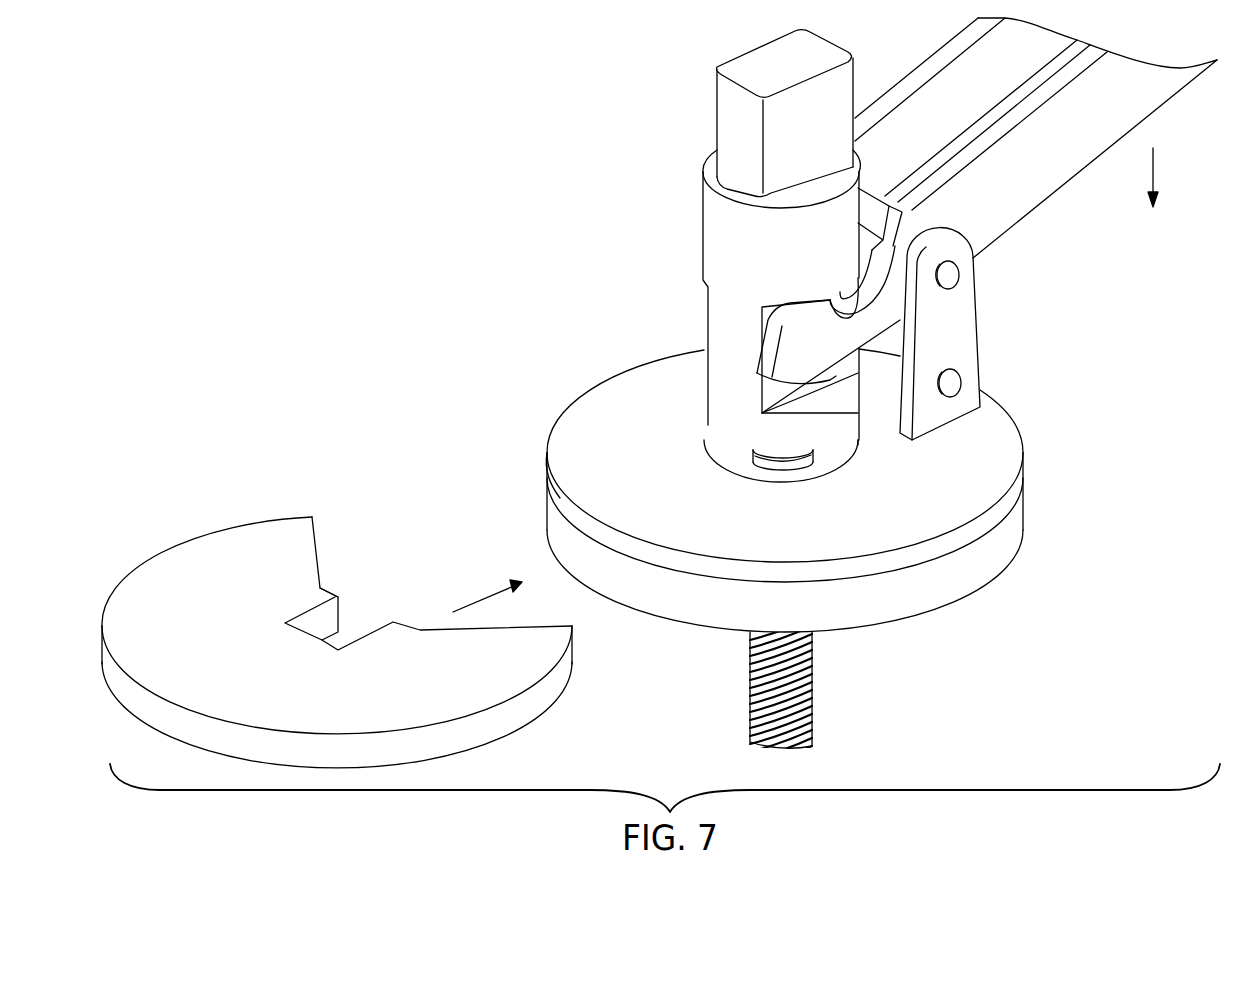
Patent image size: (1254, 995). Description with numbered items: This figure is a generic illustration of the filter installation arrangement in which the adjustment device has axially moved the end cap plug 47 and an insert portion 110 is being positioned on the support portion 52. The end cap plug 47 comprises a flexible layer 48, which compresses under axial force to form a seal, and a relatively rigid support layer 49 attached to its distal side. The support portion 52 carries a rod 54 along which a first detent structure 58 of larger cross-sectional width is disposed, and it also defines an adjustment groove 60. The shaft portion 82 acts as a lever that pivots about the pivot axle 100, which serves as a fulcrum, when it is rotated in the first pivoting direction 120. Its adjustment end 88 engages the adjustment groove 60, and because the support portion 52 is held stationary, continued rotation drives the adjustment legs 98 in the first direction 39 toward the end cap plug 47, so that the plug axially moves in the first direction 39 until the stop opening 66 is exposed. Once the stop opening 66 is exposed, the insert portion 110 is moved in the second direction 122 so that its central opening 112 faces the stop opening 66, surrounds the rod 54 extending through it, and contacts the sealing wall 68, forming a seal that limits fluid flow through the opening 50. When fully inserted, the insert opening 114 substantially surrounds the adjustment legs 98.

The first direction 39 is at (835, 655).
The end cap plug 47 is at (1023, 473).
The flexible layer 48 is at (550, 521).
The support layer 49 is at (548, 479).
The opening 50 is at (705, 448).
The support portion 52 is at (717, 98).
The rod 54 is at (783, 464).
The first detent structure 58 is at (703, 220).
The adjustment groove 60 is at (762, 323).
The stop opening 66 is at (838, 462).
The sealing wall 68 is at (850, 440).
The shaft portion 82 is at (1077, 176).
The adjustment end 88 is at (830, 387).
The adjustment legs 98 is at (961, 334).
The pivot axle 100 is at (965, 268).
The insert portion 110 is at (168, 545).
The central opening 112 is at (308, 610).
The insert opening 114 is at (330, 590).
The first pivoting direction 120 is at (1155, 172).
The second direction 122 is at (480, 600).